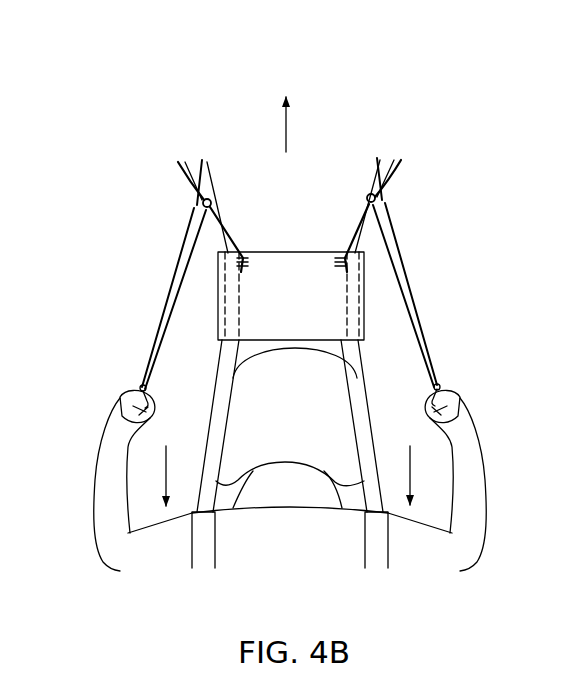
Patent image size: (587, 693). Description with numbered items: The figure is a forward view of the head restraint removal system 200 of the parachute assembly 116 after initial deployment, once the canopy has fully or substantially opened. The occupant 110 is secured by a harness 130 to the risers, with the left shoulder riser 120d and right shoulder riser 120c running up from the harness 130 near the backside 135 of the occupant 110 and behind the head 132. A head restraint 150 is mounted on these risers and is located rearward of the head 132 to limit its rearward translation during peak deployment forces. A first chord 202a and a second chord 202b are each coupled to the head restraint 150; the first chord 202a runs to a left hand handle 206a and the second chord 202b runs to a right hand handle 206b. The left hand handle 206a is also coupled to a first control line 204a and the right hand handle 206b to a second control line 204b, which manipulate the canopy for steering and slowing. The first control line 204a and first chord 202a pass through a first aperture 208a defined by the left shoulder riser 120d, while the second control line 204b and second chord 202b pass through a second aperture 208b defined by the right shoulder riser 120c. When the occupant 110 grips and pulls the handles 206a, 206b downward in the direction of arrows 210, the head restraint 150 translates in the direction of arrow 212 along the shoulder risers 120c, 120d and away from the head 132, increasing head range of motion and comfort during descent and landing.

The parachute assembly 116 is at (180, 133).
The head restraint removal system 200 is at (345, 157).
The arrow 212 is at (286, 133).
The first aperture 208a is at (214, 200).
The second aperture 208b is at (364, 194).
The first control line 204a is at (187, 221).
The second control line 204b is at (401, 172).
The first chord 202a is at (238, 226).
The second chord 202b is at (346, 223).
The head restraint 150 is at (299, 304).
The head 132 is at (299, 399).
The left shoulder riser 120d is at (228, 367).
The right shoulder riser 120c is at (358, 372).
The left hand handle 206a is at (139, 390).
The right hand handle 206b is at (441, 388).
The occupant 110 is at (103, 452).
The arrows 210 is at (288, 467).
The backside 135 is at (299, 534).
The harness 130 is at (372, 554).